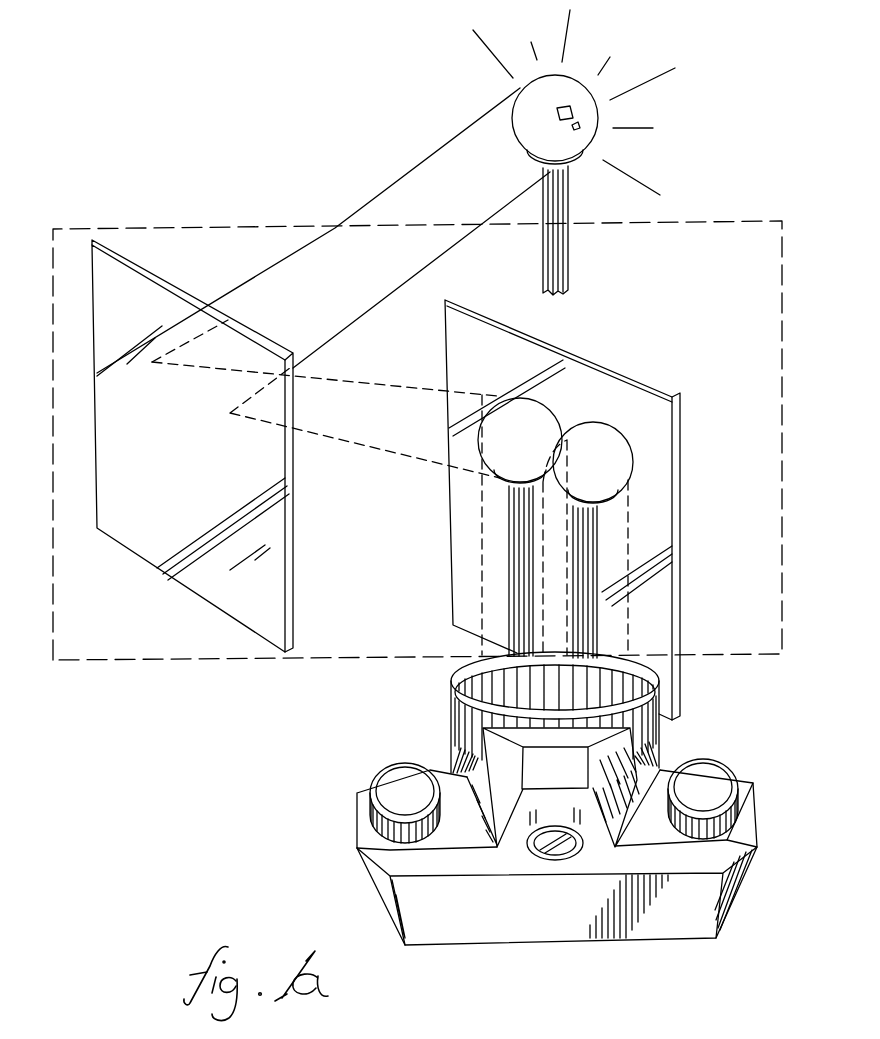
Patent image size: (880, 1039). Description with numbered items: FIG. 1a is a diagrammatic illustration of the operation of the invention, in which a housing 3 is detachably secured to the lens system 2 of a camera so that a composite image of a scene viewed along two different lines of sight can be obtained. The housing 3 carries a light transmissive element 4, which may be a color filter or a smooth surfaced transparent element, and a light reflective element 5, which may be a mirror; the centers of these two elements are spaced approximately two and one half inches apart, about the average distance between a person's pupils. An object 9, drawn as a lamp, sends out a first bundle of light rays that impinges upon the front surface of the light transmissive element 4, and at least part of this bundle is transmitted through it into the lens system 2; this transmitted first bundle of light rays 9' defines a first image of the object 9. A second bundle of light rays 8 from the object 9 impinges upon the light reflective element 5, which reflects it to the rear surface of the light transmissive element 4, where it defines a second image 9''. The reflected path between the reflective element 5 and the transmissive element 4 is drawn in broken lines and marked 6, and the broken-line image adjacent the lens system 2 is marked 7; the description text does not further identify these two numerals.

The lens system 2 is at (449, 726).
The housing 3 is at (755, 220).
The light transmissive element 4 is at (660, 390).
The light reflective element 5 is at (92, 240).
The reflected light beam 6 is at (357, 445).
The virtual lamp image 7 is at (632, 641).
The second bundle of light rays 8 is at (330, 230).
The object 9 is at (574, 152).
The transmitted first bundle of light rays 9' is at (638, 540).
The second image 9'' is at (466, 527).